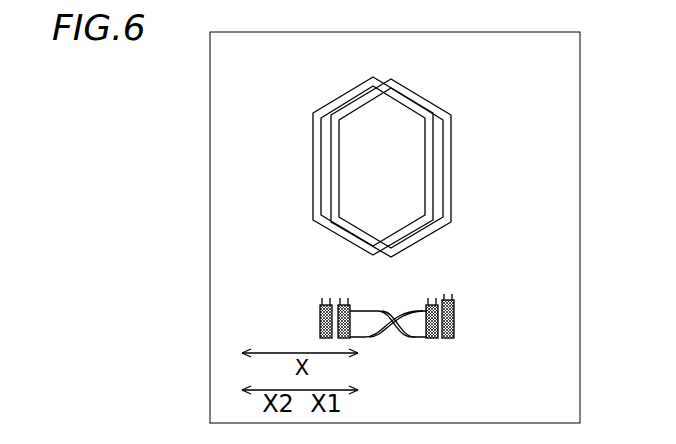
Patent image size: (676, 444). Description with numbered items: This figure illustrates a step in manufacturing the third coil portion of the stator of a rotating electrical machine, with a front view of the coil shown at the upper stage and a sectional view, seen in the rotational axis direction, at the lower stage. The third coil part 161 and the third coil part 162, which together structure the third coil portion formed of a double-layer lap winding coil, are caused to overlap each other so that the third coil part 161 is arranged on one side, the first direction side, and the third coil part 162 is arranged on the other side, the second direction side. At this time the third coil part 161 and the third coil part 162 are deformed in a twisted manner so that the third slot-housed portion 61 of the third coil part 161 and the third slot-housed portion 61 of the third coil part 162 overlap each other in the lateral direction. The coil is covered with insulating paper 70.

The third coil part 161 is at (427, 238).
The third coil part 162 is at (390, 207).
The third slot-housed portion 61 is at (438, 292).
The insulating paper 70 is at (355, 326).